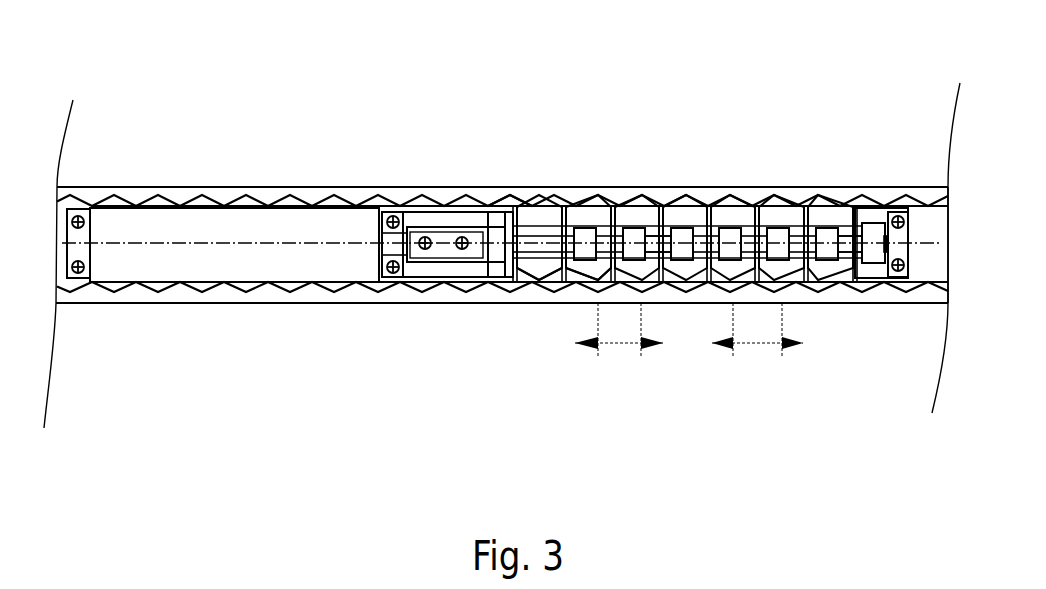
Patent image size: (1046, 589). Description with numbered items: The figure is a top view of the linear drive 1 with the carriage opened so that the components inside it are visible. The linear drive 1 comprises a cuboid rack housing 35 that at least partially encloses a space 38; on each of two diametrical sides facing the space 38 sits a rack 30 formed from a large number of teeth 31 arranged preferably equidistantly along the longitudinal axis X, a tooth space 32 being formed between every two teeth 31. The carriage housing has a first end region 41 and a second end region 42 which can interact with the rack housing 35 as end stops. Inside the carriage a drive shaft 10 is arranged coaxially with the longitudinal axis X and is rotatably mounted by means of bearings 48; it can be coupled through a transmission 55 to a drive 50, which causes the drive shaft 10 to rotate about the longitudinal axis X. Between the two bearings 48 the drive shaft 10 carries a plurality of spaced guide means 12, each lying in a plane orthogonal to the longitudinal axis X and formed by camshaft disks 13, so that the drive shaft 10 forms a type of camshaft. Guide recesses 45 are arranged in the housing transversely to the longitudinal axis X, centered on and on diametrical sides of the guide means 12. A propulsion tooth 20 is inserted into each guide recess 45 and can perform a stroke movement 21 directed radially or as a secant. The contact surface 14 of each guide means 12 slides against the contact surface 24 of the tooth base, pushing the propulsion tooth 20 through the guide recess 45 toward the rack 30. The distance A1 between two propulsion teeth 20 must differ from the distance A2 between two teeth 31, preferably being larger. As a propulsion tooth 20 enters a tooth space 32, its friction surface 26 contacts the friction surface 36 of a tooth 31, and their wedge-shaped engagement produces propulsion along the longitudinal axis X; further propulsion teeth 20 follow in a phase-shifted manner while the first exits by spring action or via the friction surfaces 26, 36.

The linear drive 1 is at (285, 92).
The longitudinal axis X is at (317, 242).
The drive shaft 10 is at (550, 222).
The guide means 12 is at (732, 240).
The camshaft disks 13 is at (732, 240).
The contact surface 14 is at (782, 225).
The propulsion tooth 20 is at (525, 205).
The stroke movement 21 is at (537, 278).
The contact surface 24 is at (846, 232).
The friction surface 26 is at (578, 277).
The rack 30 is at (448, 200).
The teeth 31 is at (275, 293).
The tooth space 32 is at (383, 283).
The rack housing 35 is at (520, 193).
The friction surface 36 is at (592, 212).
The space 38 is at (937, 255).
The first end region 41 is at (57, 243).
The second end region 42 is at (913, 233).
The guide recess 45 is at (670, 215).
The bearings 48 is at (497, 257).
The drive 50 is at (193, 209).
The transmission 55 is at (420, 228).
The distance between two propulsion teeth A1 is at (612, 347).
The distance between two teeth A2 is at (748, 343).